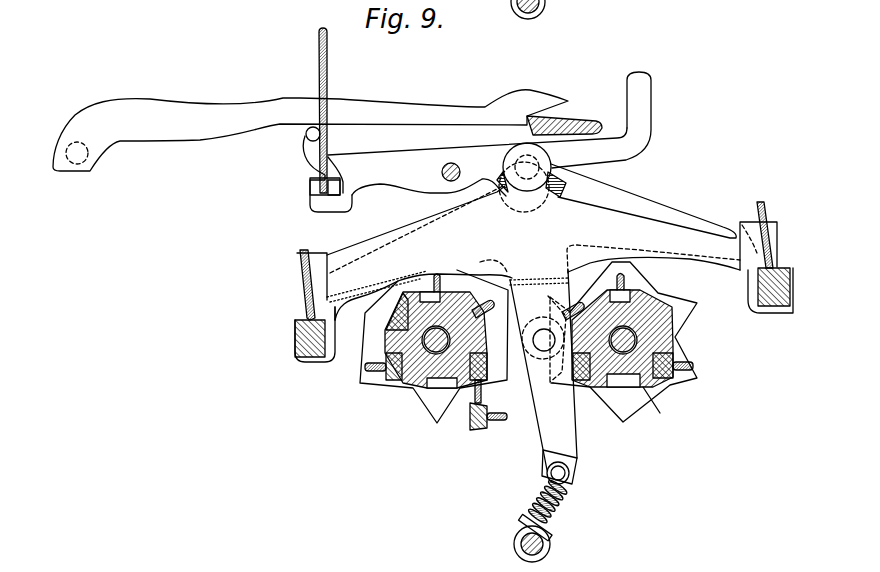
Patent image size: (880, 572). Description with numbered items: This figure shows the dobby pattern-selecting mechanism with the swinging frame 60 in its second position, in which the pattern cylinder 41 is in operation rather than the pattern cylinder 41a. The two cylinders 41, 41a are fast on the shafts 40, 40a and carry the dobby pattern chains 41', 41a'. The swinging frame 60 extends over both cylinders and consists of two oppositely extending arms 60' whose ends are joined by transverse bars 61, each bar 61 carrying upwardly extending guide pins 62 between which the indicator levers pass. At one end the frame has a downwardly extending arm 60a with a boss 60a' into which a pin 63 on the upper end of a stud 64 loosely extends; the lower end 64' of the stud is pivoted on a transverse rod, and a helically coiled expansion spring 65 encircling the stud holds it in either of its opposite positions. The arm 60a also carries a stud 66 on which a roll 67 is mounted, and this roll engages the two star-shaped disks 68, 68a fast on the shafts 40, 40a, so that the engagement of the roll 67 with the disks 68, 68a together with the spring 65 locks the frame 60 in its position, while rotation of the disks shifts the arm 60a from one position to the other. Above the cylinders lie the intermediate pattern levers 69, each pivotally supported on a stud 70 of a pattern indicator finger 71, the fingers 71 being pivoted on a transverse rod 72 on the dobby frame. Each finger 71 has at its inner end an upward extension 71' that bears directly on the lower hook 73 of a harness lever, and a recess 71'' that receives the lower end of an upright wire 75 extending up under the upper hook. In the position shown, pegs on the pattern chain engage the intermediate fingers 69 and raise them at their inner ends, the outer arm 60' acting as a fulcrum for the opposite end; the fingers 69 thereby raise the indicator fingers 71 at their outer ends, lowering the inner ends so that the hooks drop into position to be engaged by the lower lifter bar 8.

The lower lifter bar 8 is at (574, 115).
The shaft of pattern cylinder 40 is at (407, 392).
The shaft of pattern cylinder 40a is at (593, 393).
The pattern cylinder 41 is at (371, 360).
The dobby pattern chain 41' is at (412, 409).
The pattern cylinder 41a is at (666, 407).
The dobby pattern chain 41a' is at (692, 355).
The swinging frame 60 is at (537, 258).
The oppositely extending arms 60' is at (536, 330).
The downwardly extending arm 60a is at (538, 370).
The boss 60a' is at (532, 472).
The transverse bar 61 is at (295, 335).
The guide pin 62 is at (298, 272).
The pin 63 is at (565, 470).
The stud 64 is at (563, 502).
The lower end of stud 64' is at (511, 276).
The helically coiled expansion spring 65 is at (533, 500).
The stud 66 is at (541, 344).
The roll 67 is at (526, 345).
The star-shaped disk 68 is at (433, 407).
The star-shaped disk 68a is at (623, 407).
The intermediate pattern lever 69 is at (397, 257).
The stud 70 is at (530, 167).
The pattern indicator finger 71 is at (513, 134).
The upward extension 71' is at (303, 169).
The recess 71'' is at (302, 199).
The transverse rod 72 is at (442, 176).
The lower hook 73 is at (405, 107).
The upright wire 75 is at (320, 50).